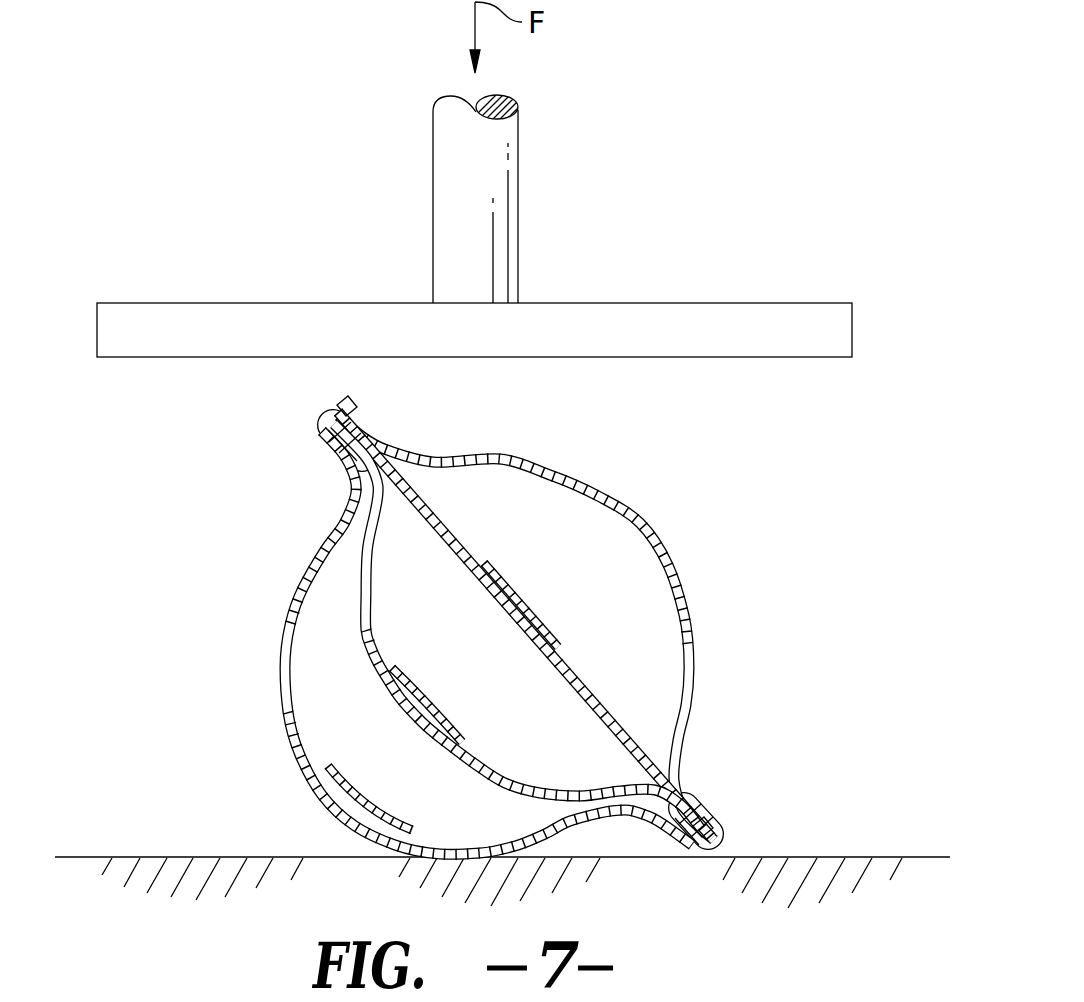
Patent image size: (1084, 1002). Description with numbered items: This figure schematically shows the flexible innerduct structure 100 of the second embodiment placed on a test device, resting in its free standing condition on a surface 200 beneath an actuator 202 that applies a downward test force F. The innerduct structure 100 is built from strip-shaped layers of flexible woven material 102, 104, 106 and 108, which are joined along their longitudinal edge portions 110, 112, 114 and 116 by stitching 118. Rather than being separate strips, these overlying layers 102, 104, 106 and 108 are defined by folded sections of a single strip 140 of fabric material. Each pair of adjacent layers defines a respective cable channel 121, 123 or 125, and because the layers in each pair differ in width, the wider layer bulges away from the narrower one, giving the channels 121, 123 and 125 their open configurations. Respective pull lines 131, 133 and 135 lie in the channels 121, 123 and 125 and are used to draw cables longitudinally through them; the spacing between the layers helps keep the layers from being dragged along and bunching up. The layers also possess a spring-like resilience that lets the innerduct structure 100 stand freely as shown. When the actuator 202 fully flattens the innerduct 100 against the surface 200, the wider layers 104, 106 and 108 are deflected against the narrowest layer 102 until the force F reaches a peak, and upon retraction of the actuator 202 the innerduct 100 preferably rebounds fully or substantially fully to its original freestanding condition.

The flexible innerduct structure 100 is at (471, 647).
The layer of flexible woven material 102 is at (454, 532).
The layer of flexible woven material 104 is at (628, 513).
The layer of flexible woven material 106 is at (358, 603).
The layer of flexible woven material 108 is at (283, 683).
The longitudinal edge portion 110 is at (369, 432).
The longitudinal edge portion 112 is at (348, 400).
The longitudinal edge portion 114 is at (350, 455).
The longitudinal edge portion 116 is at (328, 416).
The stitching 118 is at (328, 448).
The cable channel 121 is at (556, 536).
The cable channel 123 is at (446, 613).
The cable channel 125 is at (358, 700).
The pull line 131 is at (532, 604).
The pull line 133 is at (436, 720).
The pull line 135 is at (402, 815).
The single strip of fabric material 140 is at (697, 617).
The surface 200 is at (208, 857).
The actuator 202 is at (627, 303).